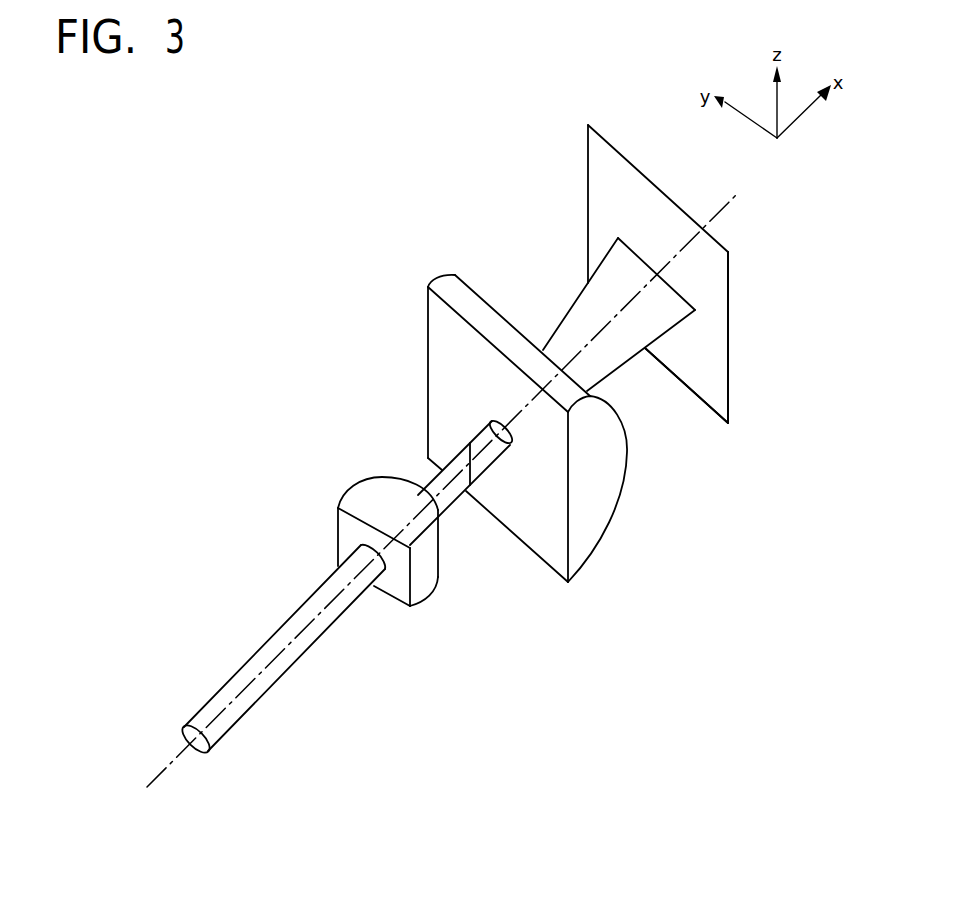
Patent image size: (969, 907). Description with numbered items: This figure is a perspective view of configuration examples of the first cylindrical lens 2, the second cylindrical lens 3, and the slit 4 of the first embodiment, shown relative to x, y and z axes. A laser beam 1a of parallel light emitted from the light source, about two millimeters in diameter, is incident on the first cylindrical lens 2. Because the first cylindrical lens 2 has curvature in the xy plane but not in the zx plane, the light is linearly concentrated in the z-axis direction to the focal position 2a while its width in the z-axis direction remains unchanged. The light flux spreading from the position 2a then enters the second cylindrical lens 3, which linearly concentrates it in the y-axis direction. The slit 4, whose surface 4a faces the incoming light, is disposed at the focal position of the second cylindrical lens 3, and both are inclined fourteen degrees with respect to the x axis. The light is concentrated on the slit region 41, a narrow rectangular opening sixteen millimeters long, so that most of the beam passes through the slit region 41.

The laser beam 1a is at (251, 658).
The first cylindrical lens 2 is at (371, 477).
The position 2a is at (482, 474).
The second cylindrical lens 3 is at (453, 277).
The slit 4 is at (588, 168).
The slit region 41 is at (677, 292).
The irradiated surface of plate 4a is at (710, 290).